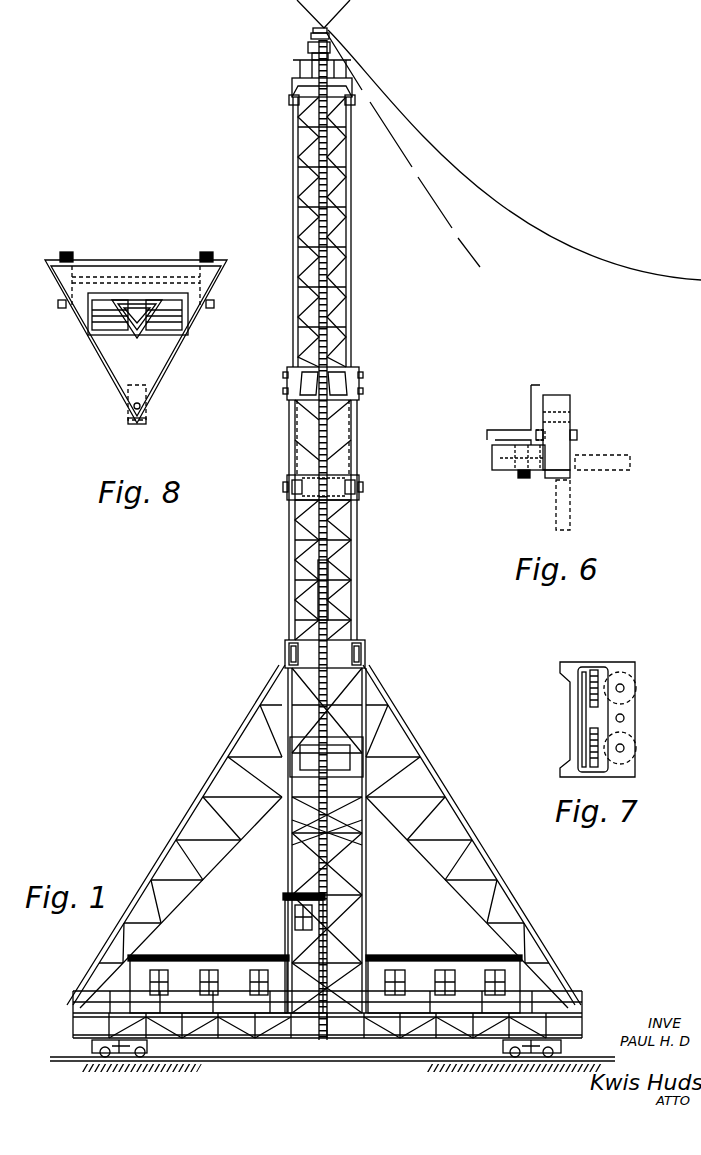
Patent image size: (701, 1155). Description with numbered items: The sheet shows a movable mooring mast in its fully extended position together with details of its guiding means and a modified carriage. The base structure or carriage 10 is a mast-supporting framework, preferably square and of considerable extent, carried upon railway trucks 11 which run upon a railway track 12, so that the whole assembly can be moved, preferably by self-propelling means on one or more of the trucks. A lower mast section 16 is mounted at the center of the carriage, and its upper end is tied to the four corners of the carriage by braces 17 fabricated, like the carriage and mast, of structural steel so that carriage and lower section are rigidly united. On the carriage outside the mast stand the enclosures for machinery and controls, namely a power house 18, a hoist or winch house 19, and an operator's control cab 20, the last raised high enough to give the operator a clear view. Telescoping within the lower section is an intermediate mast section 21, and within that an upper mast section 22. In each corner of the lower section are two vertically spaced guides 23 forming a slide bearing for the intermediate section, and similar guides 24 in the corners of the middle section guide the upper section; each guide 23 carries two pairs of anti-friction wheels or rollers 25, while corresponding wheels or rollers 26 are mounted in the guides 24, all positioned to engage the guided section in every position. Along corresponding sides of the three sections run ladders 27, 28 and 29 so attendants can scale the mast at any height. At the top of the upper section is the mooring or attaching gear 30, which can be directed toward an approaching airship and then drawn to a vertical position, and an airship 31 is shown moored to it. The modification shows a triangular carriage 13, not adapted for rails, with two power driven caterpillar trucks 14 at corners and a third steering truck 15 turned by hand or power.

In FIG. 1, the base structure or carriage 10 is at (73, 1016).
In FIG. 1, the railway trucks 11 is at (100, 1050).
In FIG. 1, the railway track 12 is at (62, 1056).
In FIG. 8, the triangular carriage 13 is at (160, 372).
In FIG. 8, the power driven caterpillar trucks 14 is at (64, 252).
In FIG. 8, the steering truck 15 is at (128, 424).
In FIG. 1, the lower mast section 16 is at (366, 866).
In FIG. 1, the braces 17 is at (232, 797).
In FIG. 1, the power house 18 is at (224, 960).
In FIG. 1, the hoist or winch house 19 is at (426, 958).
In FIG. 1, the operator's control cab 20 is at (288, 920).
In FIG. 1, the intermediate mast section 21 is at (355, 556).
In FIG. 6, the intermediate mast section 21 is at (572, 463).
In FIG. 1, the upper mast section 22 is at (346, 237).
In FIG. 6, the upper mast section 22 is at (528, 410).
In FIG. 1, the guides 23 is at (287, 656).
In FIG. 7, the guides 23 is at (612, 665).
In FIG. 1, the guides 24 is at (287, 382).
In FIG. 6, the guides 24 is at (558, 405).
In FIG. 6, the anti-friction wheels or rollers 25 is at (602, 470).
In FIG. 7, the anti-friction wheels or rollers 25 is at (592, 680).
In FIG. 6, the anti-friction wheels or rollers 26 is at (575, 434).
In FIG. 1, the ladder 27 is at (300, 833).
In FIG. 1, the ladder 28 is at (327, 592).
In FIG. 1, the ladder 29 is at (327, 281).
In FIG. 1, the mooring or attaching gear 30 is at (312, 33).
In FIG. 1, the airship 31 is at (538, 230).